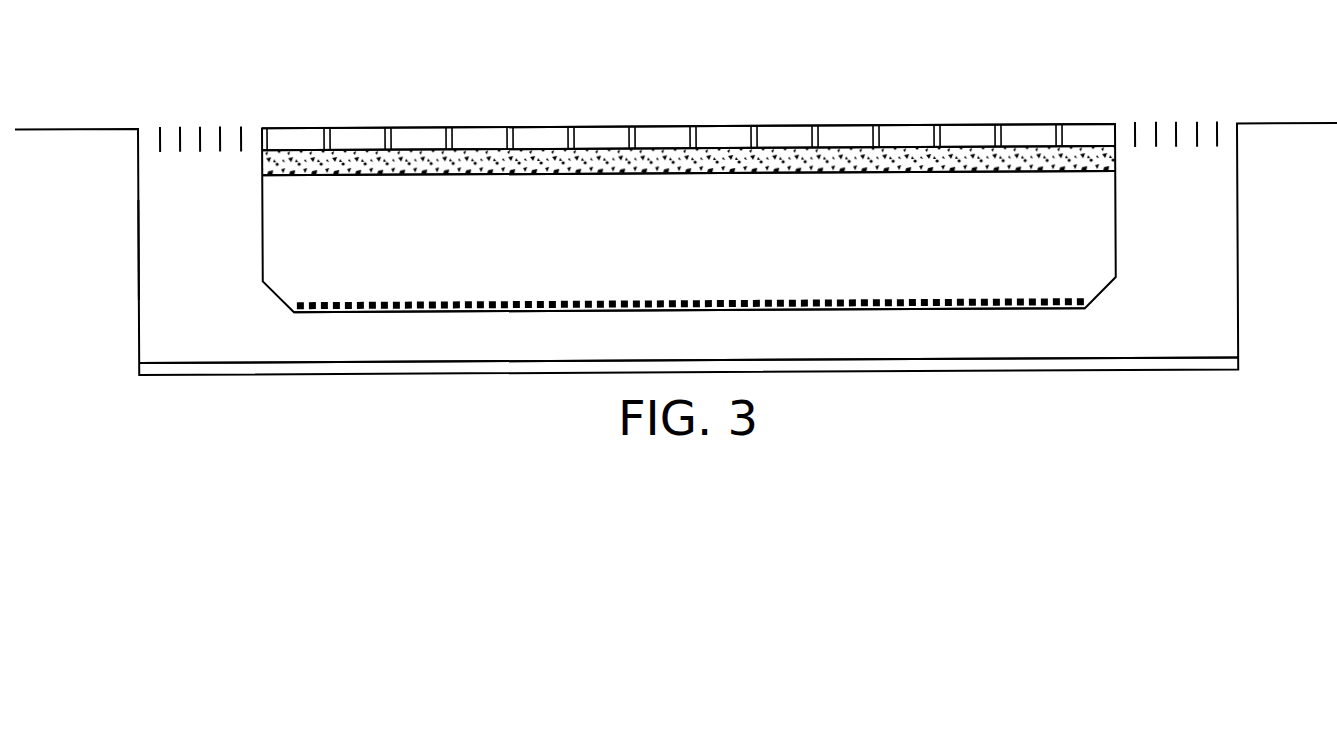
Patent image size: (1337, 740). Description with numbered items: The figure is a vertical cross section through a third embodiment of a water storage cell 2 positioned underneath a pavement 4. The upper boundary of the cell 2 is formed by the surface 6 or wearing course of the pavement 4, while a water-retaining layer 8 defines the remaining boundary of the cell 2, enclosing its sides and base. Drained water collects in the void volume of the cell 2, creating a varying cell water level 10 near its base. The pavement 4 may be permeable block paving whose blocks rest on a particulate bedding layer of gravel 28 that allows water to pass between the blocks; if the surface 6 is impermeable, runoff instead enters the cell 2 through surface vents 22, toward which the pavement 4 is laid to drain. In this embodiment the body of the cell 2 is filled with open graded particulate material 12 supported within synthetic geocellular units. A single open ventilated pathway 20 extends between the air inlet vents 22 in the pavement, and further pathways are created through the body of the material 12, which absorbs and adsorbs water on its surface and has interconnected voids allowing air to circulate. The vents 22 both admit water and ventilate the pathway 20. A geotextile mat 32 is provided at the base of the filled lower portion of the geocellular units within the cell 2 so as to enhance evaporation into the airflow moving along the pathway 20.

The water storage cell 2 is at (128, 278).
The pavement 4 is at (720, 138).
The surface 6 is at (428, 127).
The water-retaining layer 8 is at (138, 214).
The cell water level 10 is at (211, 362).
The open graded particulate material 12 is at (672, 238).
The ventilated pathway 20 is at (672, 348).
The air inlet vent 22 is at (213, 122).
The particulate bedding layer 28 is at (958, 152).
The geotextile mat 32 is at (990, 312).